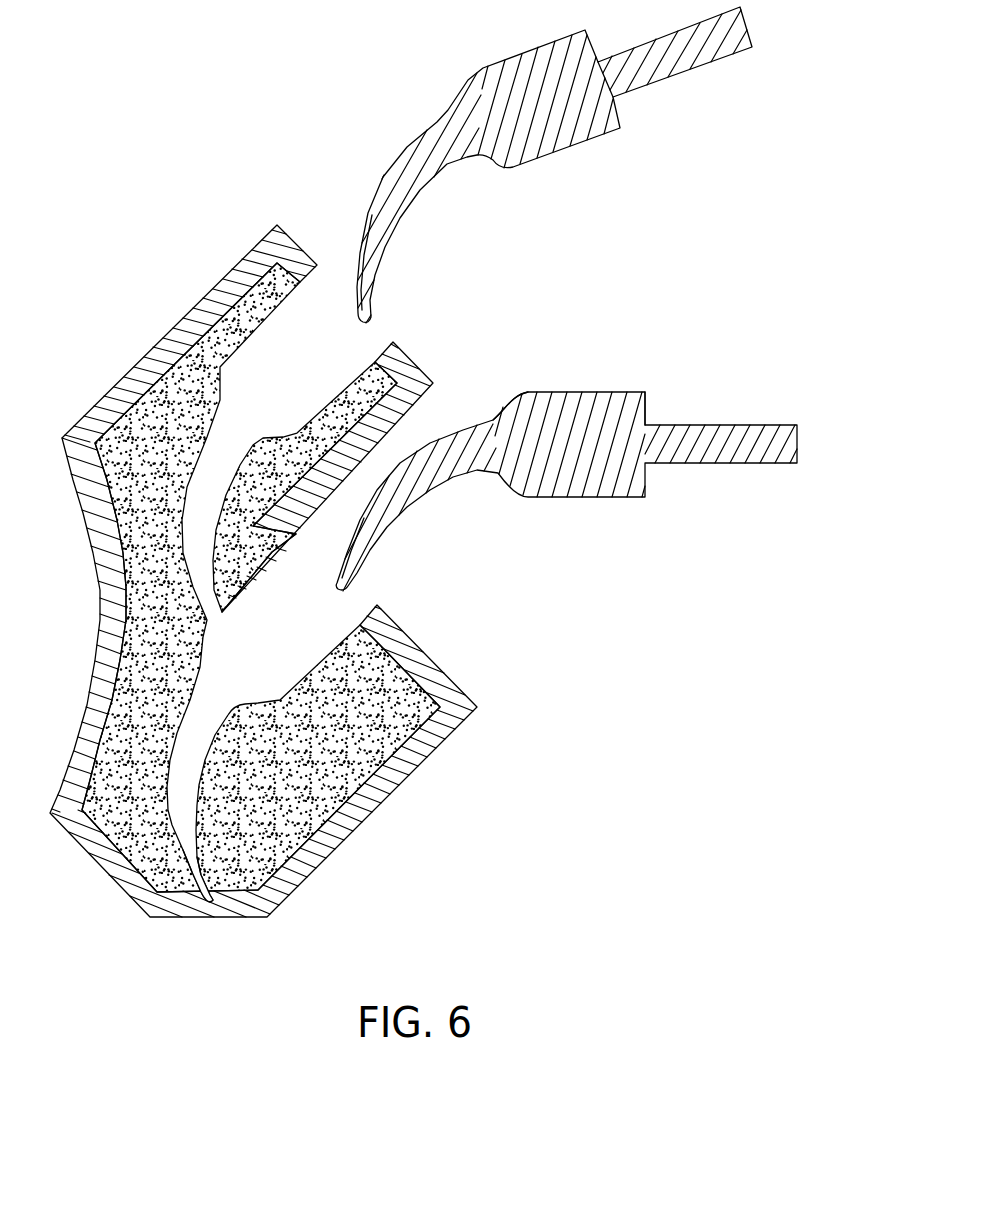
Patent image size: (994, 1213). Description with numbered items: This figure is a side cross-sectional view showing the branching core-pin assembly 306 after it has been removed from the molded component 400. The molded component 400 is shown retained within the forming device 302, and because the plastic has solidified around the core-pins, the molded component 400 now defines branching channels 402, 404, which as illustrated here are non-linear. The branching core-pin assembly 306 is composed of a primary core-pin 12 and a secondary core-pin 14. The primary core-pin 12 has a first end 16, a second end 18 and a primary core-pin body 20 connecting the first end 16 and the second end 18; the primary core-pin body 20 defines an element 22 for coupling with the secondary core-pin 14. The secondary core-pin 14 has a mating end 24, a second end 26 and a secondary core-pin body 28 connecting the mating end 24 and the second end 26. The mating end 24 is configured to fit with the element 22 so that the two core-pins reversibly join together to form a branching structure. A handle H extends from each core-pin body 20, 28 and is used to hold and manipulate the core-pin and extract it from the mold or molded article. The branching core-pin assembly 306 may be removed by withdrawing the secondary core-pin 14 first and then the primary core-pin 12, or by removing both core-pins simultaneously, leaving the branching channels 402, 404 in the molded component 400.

The primary core-pin 12 is at (566, 461).
The secondary core-pin 14 is at (554, 165).
The first end 16 is at (350, 579).
The second end 18 is at (644, 392).
The primary core-pin body 20 is at (600, 457).
The element 22 is at (548, 387).
The mating end 24 is at (367, 307).
The second end 26 is at (623, 117).
The secondary core-pin body 28 is at (553, 117).
The forming device 302 is at (122, 378).
The branching core-pin assembly 306 is at (566, 301).
The molded component 400 is at (185, 657).
The branching channel 402 is at (337, 357).
The branching channel 404 is at (303, 628).
The handle H is at (695, 65).